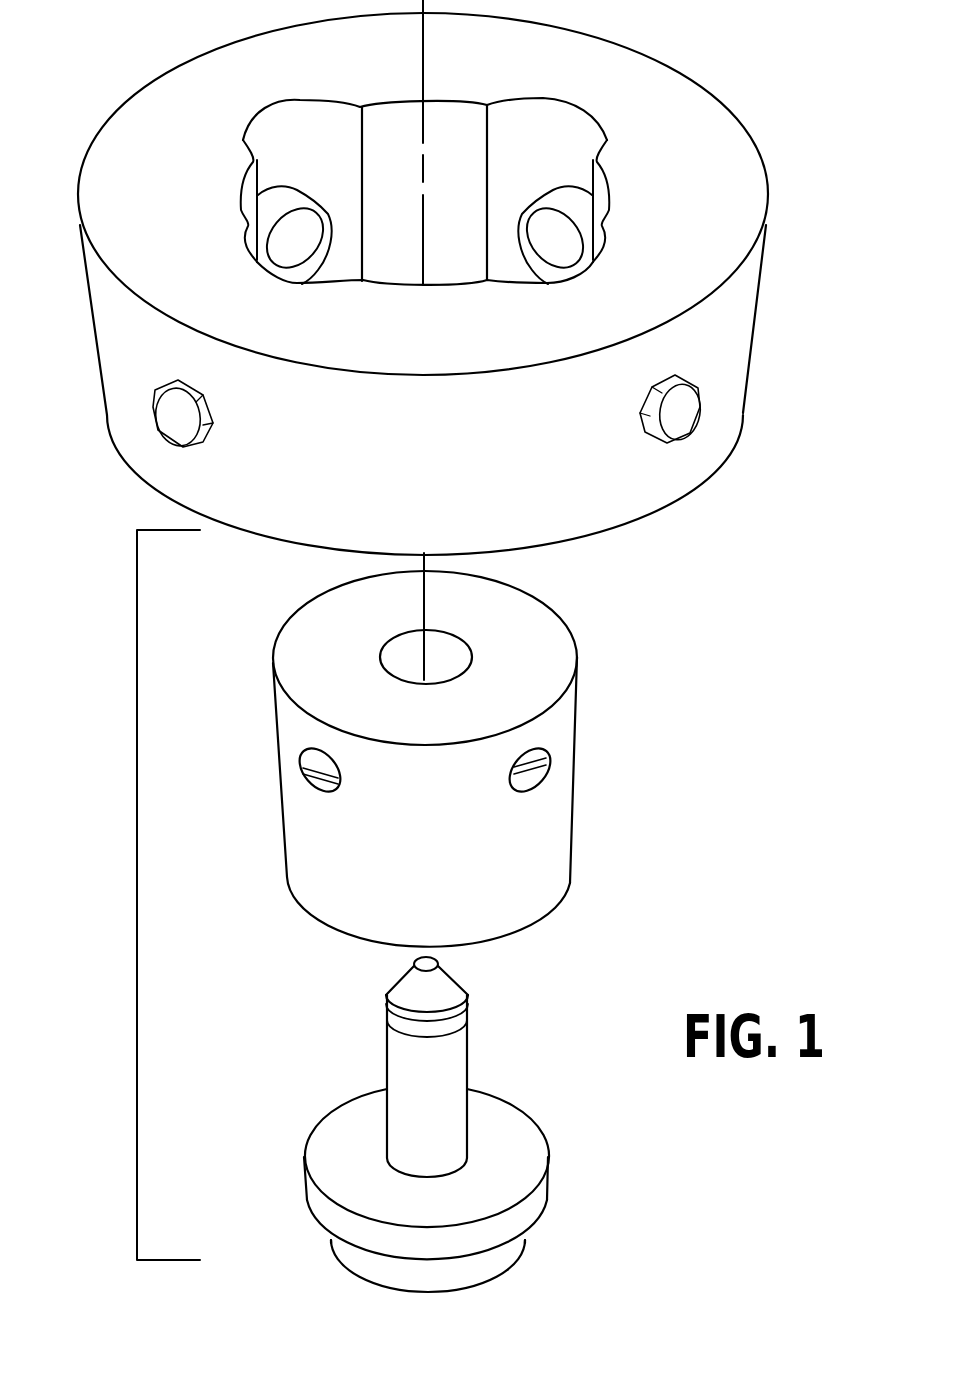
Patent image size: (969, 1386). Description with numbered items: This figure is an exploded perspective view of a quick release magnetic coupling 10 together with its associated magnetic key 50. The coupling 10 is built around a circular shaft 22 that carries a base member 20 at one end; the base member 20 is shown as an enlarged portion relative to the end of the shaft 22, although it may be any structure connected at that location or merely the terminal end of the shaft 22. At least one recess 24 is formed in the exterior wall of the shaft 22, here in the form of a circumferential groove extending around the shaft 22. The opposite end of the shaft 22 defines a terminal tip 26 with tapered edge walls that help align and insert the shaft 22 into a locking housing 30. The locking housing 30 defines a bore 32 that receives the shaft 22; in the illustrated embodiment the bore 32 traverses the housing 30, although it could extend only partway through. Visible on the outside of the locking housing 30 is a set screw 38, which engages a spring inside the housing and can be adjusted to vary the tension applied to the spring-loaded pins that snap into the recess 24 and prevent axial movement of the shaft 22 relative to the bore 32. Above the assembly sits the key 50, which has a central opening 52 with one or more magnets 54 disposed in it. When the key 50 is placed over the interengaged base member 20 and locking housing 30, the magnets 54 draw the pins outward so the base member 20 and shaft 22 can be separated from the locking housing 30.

The quick release magnetic coupling 10 is at (132, 797).
The base member 20 is at (531, 1167).
The shaft 22 is at (458, 1105).
The recess 24 is at (452, 1024).
The terminal tip 26 is at (447, 990).
The locking housing 30 is at (577, 717).
The bore 32 is at (470, 657).
The set screw 38 is at (540, 780).
The magnetic key 50 is at (730, 317).
The central opening 52 is at (447, 98).
The magnet 54 is at (537, 213).